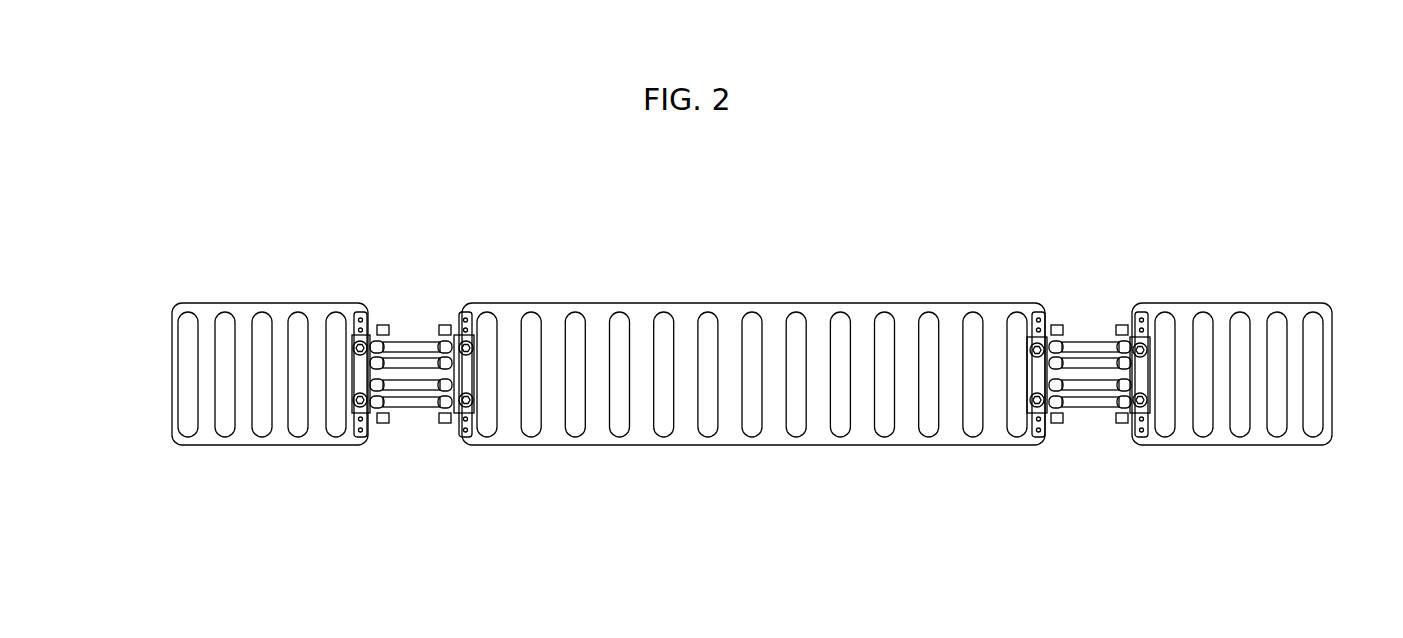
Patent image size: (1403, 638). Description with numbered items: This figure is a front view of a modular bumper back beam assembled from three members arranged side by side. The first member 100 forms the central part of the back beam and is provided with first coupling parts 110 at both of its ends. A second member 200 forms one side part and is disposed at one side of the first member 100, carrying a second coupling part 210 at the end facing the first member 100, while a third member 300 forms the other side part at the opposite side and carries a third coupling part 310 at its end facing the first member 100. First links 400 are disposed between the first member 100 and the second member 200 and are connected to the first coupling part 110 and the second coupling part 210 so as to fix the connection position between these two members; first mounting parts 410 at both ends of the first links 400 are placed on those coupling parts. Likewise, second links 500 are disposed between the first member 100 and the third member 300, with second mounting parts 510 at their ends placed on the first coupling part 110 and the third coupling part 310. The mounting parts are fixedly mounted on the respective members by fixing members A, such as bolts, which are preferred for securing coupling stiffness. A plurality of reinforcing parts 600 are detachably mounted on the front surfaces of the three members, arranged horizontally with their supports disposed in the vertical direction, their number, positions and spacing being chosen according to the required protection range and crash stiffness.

The first member 100 is at (815, 435).
The first coupling part 110 is at (462, 440).
The second member 200 is at (205, 445).
The second coupling part 210 is at (363, 440).
The third member 300 is at (1252, 312).
The third coupling part 310 is at (1140, 440).
The first link 400 is at (418, 312).
The first mounting part 410 is at (363, 312).
The second link 500 is at (1095, 312).
The second mounting part 510 is at (1037, 308).
The reinforcing part 600 is at (260, 320).
The fixing member A is at (353, 405).